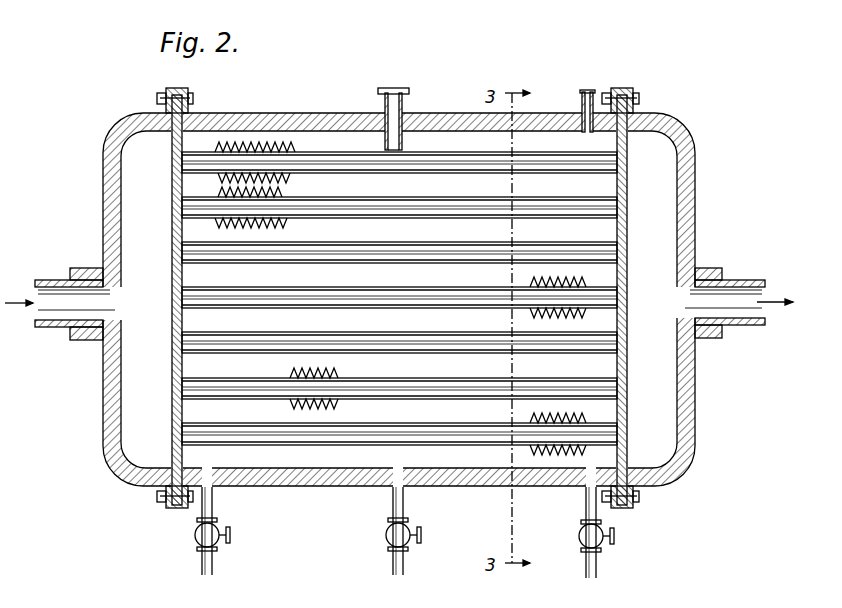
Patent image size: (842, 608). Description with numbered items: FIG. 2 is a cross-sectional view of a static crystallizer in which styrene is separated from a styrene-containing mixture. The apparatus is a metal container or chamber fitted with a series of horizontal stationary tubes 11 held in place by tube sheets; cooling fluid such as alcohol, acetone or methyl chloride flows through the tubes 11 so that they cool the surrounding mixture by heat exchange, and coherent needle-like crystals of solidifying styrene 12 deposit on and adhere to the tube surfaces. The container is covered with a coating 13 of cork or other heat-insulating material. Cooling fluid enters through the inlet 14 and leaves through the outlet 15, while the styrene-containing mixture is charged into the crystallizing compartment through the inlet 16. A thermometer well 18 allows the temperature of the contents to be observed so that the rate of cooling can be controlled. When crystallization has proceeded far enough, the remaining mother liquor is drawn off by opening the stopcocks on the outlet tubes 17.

The horizontal stationary tubes 11 is at (433, 160).
The solidifying or crystallizing styrene 12 is at (244, 150).
The coating 13 is at (301, 116).
The inlet 14 is at (67, 312).
The outlet 15 is at (740, 297).
The inlet 16 is at (593, 91).
The outlet 17 is at (200, 536).
The thermometer well 18 is at (395, 88).